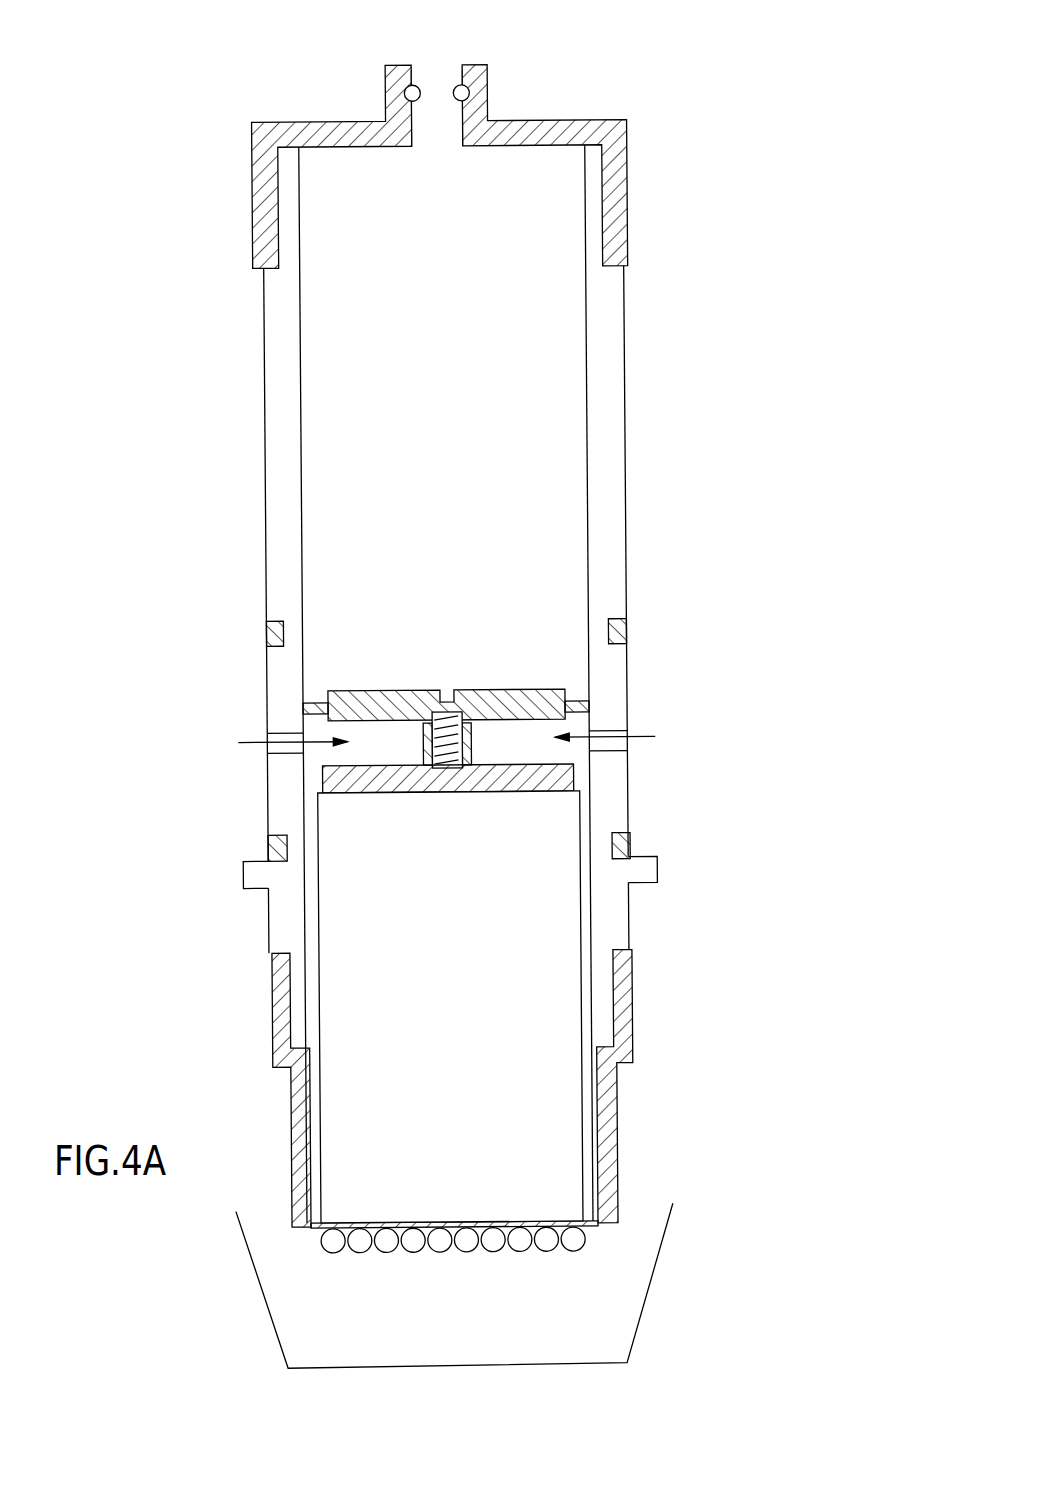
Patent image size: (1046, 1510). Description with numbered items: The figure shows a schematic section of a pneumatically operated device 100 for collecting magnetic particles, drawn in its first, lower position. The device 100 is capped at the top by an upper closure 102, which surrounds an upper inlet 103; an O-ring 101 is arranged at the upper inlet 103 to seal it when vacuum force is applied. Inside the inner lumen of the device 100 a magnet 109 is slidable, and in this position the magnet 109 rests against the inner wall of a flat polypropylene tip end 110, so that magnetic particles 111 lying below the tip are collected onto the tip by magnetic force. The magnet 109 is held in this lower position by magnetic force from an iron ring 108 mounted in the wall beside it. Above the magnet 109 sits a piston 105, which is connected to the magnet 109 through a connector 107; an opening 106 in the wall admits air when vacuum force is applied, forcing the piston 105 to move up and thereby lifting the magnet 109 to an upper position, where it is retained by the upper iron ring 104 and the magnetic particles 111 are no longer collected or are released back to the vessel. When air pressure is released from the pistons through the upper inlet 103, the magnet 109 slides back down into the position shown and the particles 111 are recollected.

The device 100 is at (113, 158).
The O-ring 101 is at (467, 92).
The upper closure 102 is at (628, 182).
The upper inlet 103 is at (433, 87).
The upper iron ring 104 is at (627, 633).
The piston 105 is at (588, 707).
The opening 106 is at (625, 733).
The connector 107 is at (573, 770).
The iron ring 108 is at (628, 847).
The magnet 109 is at (578, 932).
The flat polypropylene tip end 110 is at (617, 1115).
The magnetic particles 111 is at (580, 1238).